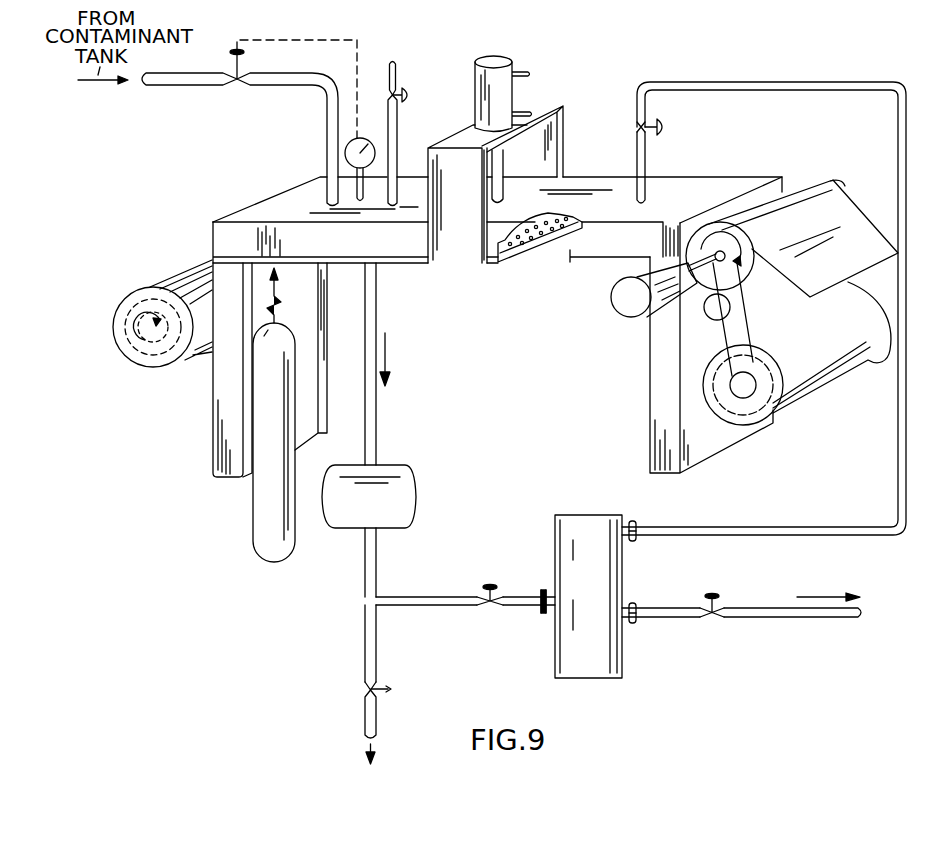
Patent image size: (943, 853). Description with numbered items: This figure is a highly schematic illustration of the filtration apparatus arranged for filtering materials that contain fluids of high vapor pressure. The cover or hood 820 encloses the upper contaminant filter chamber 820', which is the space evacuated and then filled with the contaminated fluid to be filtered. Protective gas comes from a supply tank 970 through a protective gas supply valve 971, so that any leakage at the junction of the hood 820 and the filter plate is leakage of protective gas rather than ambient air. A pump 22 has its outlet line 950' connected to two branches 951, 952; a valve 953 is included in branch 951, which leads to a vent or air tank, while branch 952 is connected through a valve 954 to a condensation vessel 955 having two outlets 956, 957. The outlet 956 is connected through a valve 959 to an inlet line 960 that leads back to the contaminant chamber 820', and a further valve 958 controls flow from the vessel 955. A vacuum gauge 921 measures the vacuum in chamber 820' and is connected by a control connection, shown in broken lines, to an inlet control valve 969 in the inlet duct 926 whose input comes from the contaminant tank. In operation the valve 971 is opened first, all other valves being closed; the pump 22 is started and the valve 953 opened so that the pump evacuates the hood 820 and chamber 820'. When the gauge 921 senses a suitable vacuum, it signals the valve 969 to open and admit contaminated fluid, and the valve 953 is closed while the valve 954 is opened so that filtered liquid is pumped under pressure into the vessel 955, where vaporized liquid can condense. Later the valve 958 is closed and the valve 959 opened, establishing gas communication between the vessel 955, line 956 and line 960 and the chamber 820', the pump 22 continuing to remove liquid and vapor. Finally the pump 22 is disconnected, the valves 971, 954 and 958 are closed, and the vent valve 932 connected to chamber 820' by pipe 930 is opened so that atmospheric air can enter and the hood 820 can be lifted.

The pump 22 is at (390, 467).
The hood 820 is at (509, 295).
The contaminant filter chamber 820' is at (540, 258).
The vacuum gauge 921 is at (345, 152).
The inlet duct 926 is at (273, 86).
The pipe 930 is at (397, 150).
The vent valve 932 is at (395, 90).
The outlet line 950' is at (403, 472).
The branch 951 is at (377, 652).
The branch 952 is at (413, 603).
The valve 953 is at (365, 689).
The valve 954 is at (497, 597).
The condensation vessel 955 is at (603, 515).
The outlet 956 is at (637, 522).
The outlet 957 is at (637, 605).
The valve 958 is at (714, 608).
The valve 959 is at (637, 128).
The inlet line 960 is at (635, 168).
The inlet control valve 969 is at (243, 78).
The supply tank 970 is at (278, 563).
The protective gas supply valve 971 is at (272, 302).